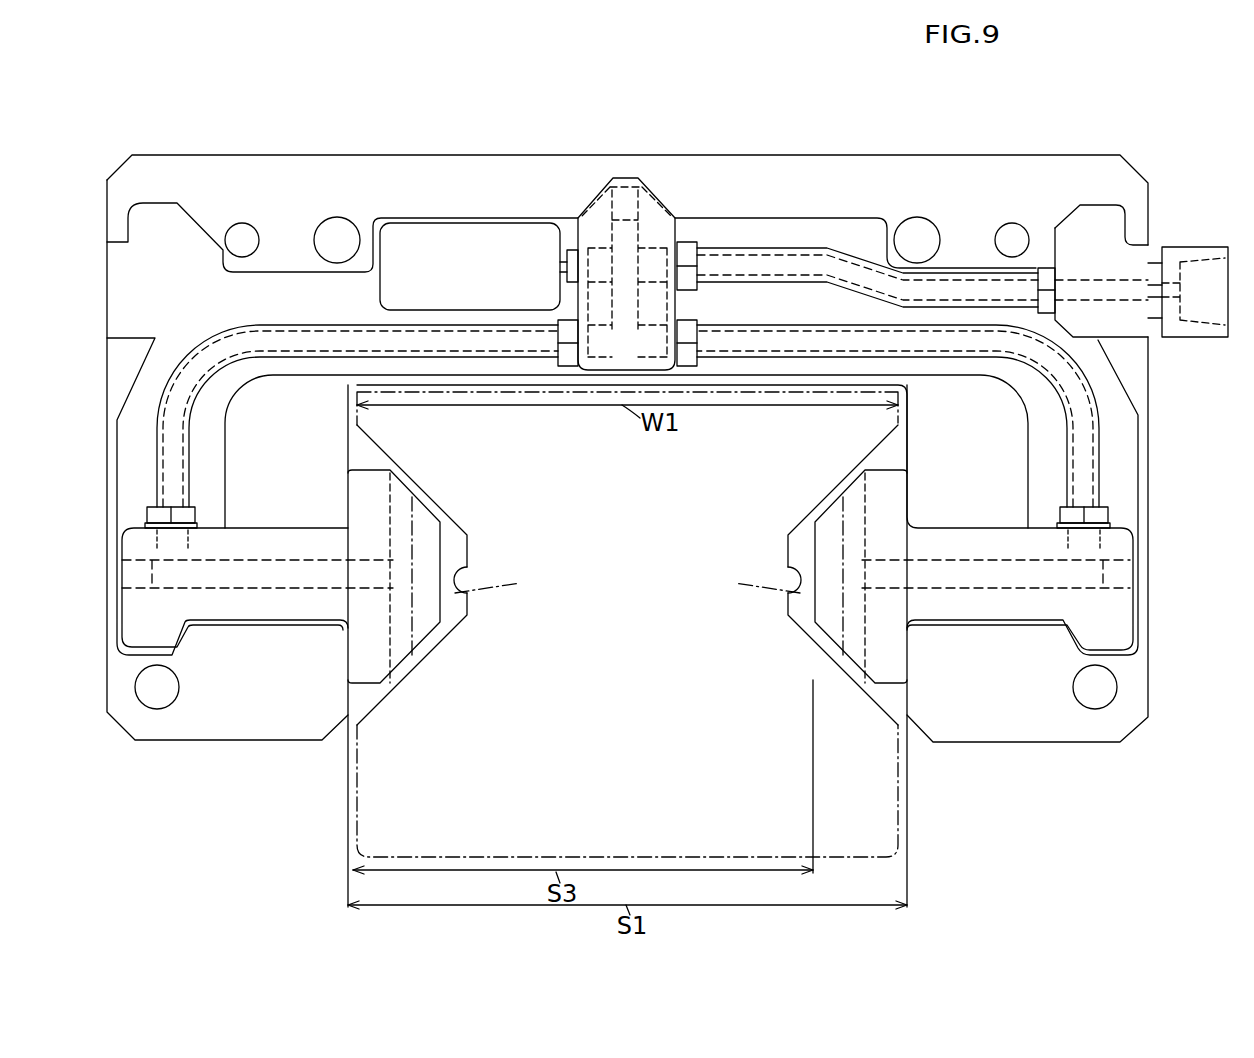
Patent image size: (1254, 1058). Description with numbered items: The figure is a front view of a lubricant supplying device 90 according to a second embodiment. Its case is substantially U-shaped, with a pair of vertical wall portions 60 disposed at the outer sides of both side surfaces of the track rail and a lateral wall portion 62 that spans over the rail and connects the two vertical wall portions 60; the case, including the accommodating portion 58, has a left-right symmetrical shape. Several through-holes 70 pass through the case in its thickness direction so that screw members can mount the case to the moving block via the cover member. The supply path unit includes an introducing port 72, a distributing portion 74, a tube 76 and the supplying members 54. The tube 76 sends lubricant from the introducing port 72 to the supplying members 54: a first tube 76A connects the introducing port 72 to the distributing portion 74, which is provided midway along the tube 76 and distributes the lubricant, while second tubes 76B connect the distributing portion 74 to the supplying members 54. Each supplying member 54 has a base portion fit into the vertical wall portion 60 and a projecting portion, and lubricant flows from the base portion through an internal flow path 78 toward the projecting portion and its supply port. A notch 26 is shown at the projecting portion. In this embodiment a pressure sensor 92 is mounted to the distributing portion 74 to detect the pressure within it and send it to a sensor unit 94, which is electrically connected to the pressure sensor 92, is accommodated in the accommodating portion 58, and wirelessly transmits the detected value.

The notch 26 is at (520, 583).
The supplying member 54 is at (430, 640).
The accommodating portion 58 is at (305, 278).
The vertical wall portion 60 is at (238, 742).
The lateral wall portion 62 is at (626, 177).
The through-hole 70 is at (1104, 690).
The introducing port 72 is at (1195, 247).
The distributing portion 74 is at (681, 233).
The tube 76 is at (627, 324).
The first tube 76A is at (792, 247).
The second tube 76B is at (740, 325).
The internal flow path 78 is at (272, 568).
The lubricant supplying device 90 is at (1092, 142).
The pressure sensor 92 is at (570, 250).
The sensor unit 94 is at (467, 218).